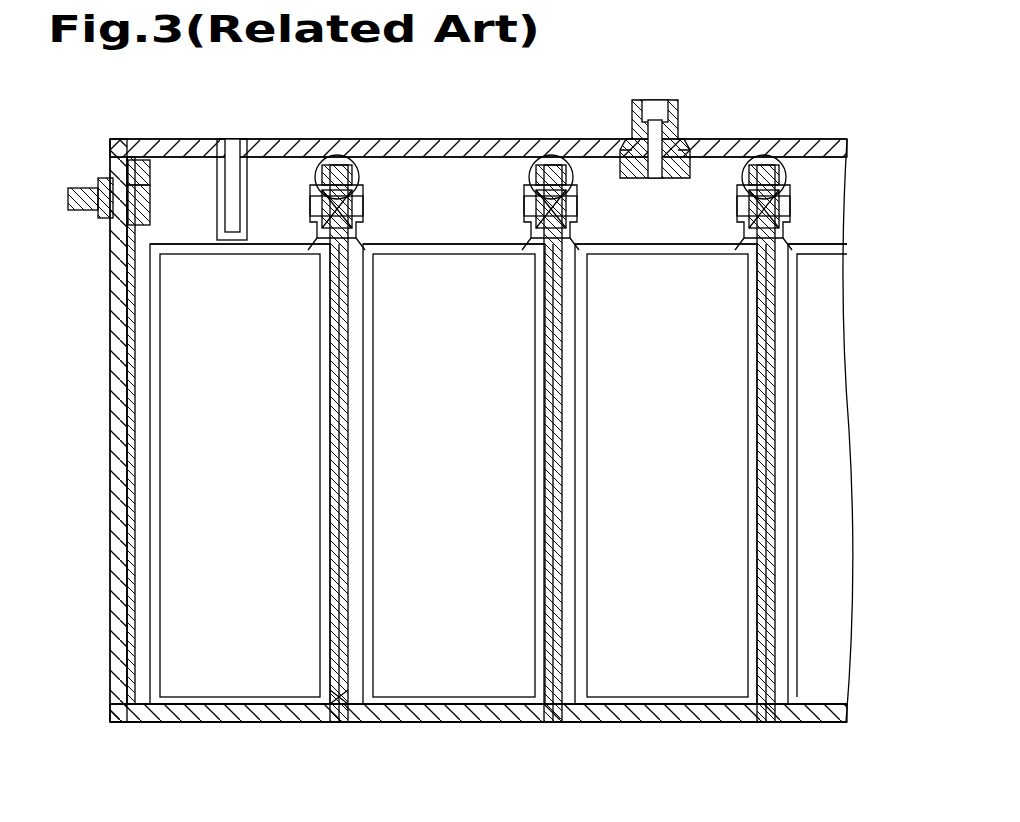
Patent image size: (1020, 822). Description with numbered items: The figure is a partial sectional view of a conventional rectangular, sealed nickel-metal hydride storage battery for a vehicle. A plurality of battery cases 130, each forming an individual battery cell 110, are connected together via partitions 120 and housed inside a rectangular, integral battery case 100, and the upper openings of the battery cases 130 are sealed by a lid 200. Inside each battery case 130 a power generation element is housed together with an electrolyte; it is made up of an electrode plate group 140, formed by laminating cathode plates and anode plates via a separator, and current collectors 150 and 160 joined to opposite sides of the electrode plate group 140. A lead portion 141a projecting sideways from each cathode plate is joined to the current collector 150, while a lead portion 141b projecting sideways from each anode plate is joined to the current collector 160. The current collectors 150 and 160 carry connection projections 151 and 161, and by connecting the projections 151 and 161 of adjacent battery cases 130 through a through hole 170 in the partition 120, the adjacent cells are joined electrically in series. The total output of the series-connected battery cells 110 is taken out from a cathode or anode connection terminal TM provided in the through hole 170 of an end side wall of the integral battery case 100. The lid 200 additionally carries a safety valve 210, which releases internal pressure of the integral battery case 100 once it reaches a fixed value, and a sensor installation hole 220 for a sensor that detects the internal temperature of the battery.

The integral battery case 100 is at (110, 464).
The battery cell 110 is at (190, 720).
The partition 120 is at (342, 700).
The battery case 130 is at (260, 192).
The electrode plate group 140 is at (218, 698).
The lead portion 141a is at (139, 698).
The lead portion 141b is at (320, 700).
The current collector 150 is at (140, 218).
The connection projection 151 is at (141, 172).
The current collector 160 is at (312, 236).
The connection projection 161 is at (318, 162).
The through hole 170 is at (100, 182).
The lid 200 is at (798, 143).
The safety valve 210 is at (644, 104).
The sensor installation hole 220 is at (232, 138).
The connection terminal TM is at (82, 212).